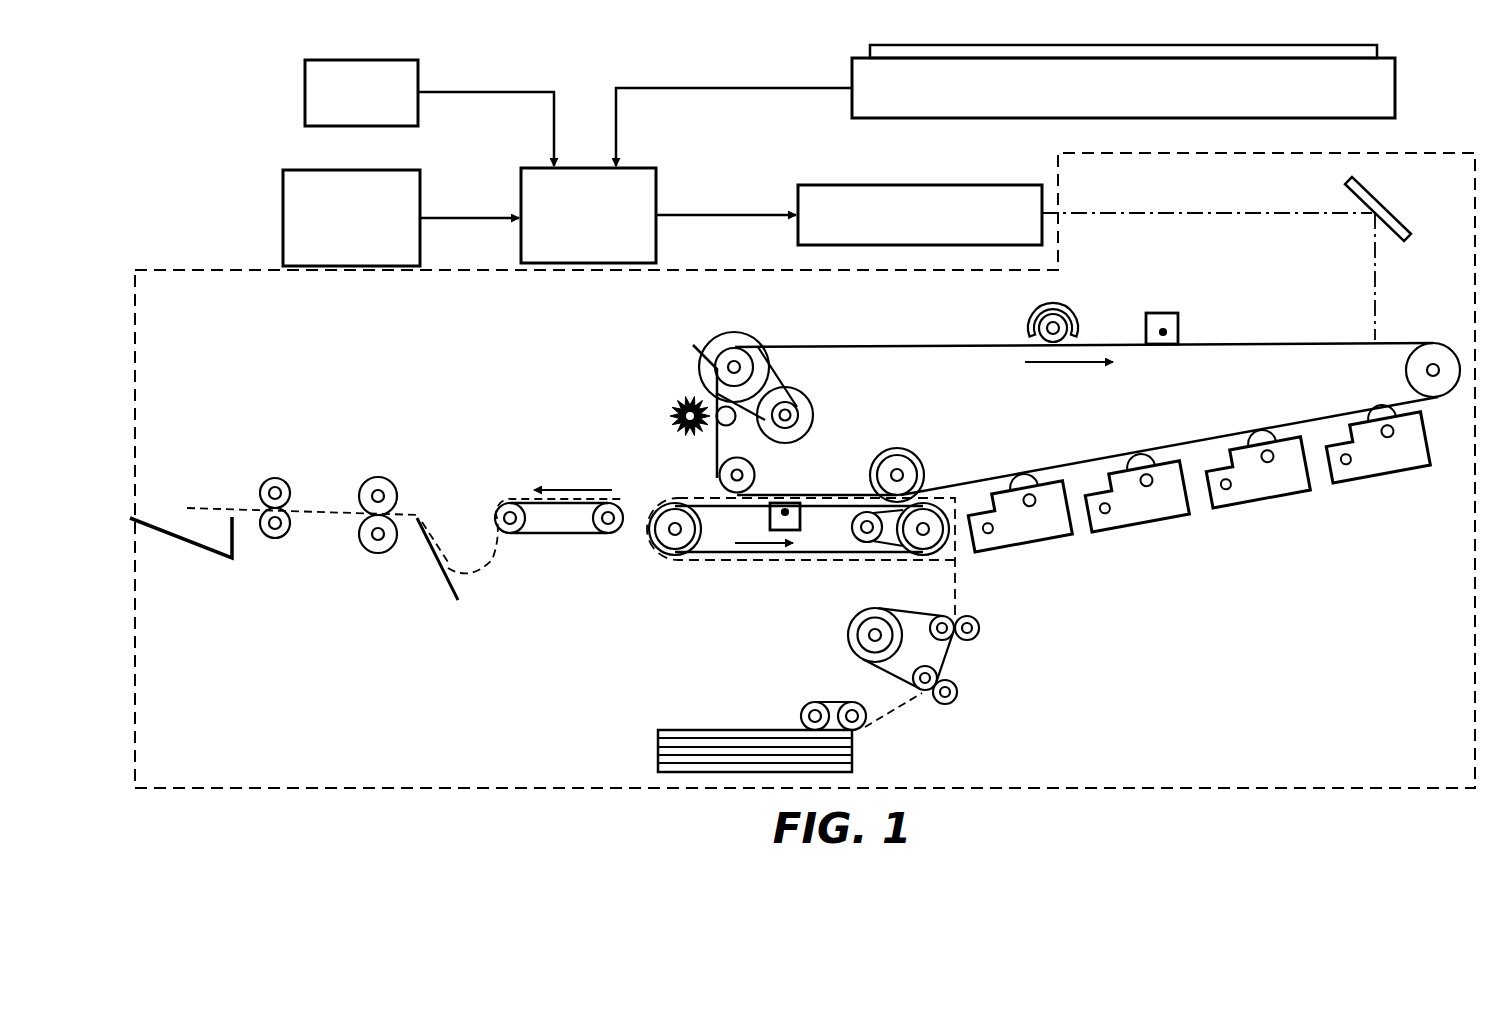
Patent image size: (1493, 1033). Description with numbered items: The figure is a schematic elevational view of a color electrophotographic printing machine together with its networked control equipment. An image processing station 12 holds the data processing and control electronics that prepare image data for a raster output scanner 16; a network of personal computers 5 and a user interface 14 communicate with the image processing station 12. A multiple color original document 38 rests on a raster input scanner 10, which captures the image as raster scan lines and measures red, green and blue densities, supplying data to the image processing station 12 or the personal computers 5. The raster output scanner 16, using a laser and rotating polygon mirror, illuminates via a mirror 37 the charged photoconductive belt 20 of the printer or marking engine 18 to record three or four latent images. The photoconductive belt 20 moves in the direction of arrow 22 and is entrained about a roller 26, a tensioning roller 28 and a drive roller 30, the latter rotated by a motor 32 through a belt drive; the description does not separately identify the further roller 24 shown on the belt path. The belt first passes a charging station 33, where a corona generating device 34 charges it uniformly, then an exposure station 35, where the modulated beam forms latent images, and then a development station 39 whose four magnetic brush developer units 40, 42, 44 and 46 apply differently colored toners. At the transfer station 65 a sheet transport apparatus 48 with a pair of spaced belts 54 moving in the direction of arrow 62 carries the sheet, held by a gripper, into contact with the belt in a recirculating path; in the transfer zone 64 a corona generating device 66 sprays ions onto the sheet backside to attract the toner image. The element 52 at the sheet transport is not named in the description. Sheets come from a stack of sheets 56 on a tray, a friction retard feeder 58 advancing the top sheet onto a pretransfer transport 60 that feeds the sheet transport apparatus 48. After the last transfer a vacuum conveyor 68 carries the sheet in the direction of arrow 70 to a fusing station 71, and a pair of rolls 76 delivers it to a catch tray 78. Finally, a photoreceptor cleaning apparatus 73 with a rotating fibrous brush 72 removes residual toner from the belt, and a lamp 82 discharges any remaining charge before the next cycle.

The personal computer 5 is at (300, 93).
The raster input scanner 10 is at (845, 47).
The image processing station 12 is at (640, 150).
The user interface 14 is at (275, 200).
The raster output scanner 16 is at (953, 160).
The printer or marking engine 18 is at (1410, 125).
The photoconductive belt 20 is at (1290, 340).
The arrow 22 is at (1055, 365).
The tensioning roller 24 is at (750, 480).
The roller 26 is at (923, 472).
The tensioning roller 28 is at (1452, 345).
The drive roller 30 is at (735, 335).
The motor 32 is at (803, 405).
The charging station 33 is at (1195, 337).
The corona generating device 34 is at (1168, 310).
The exposure station 35 is at (1362, 337).
The mirror 37 is at (1372, 190).
The multiple color original document 38 is at (1265, 45).
The development station 39 is at (1252, 608).
The developer unit 40 is at (1373, 468).
The developer unit 42 is at (1257, 492).
The developer unit 44 is at (1138, 512).
The developer unit 46 is at (1020, 537).
The sheet transport apparatus 48 is at (695, 578).
The transfer roller 52 is at (937, 557).
The spaced belts 54 is at (827, 560).
The stack of sheets 56 is at (703, 728).
The friction retard feeder 58 is at (850, 705).
The pretransfer transport 60 is at (948, 652).
The arrow 62 is at (763, 558).
The transfer zone 64 is at (795, 485).
The transfer station 65 is at (810, 508).
The corona generating device 66 is at (765, 510).
The vacuum conveyor 68 is at (565, 537).
The arrow 70 is at (582, 490).
The fusing station 71 is at (397, 452).
The fibrous brush 72 is at (663, 410).
The photoreceptor cleaning apparatus 73 is at (669, 390).
The pair of rolls 76 is at (277, 495).
The catch tray 78 is at (203, 552).
The lamp 82 is at (1075, 305).